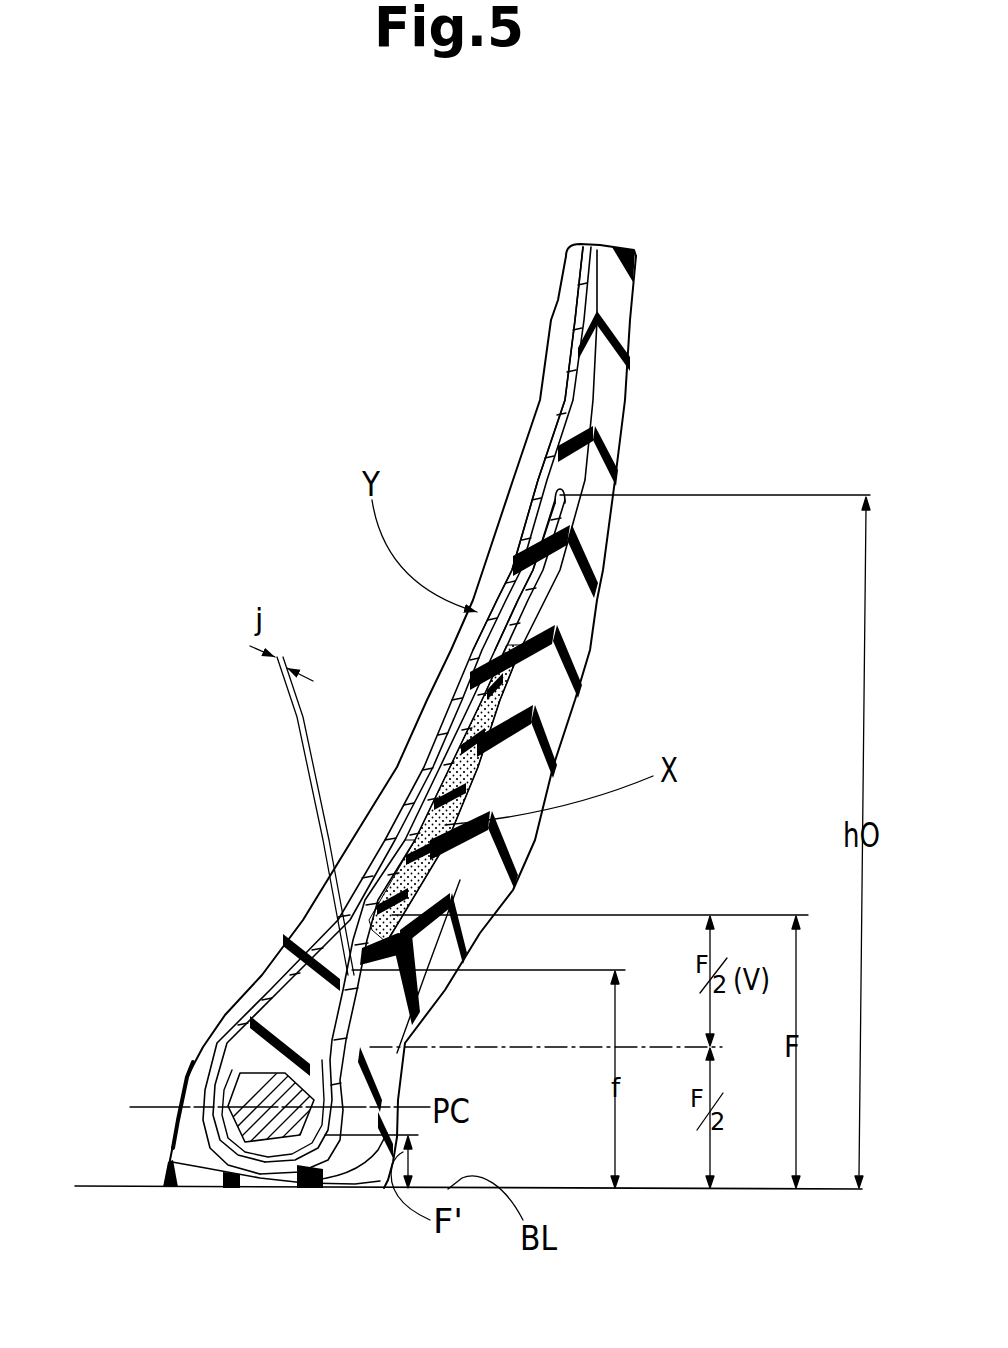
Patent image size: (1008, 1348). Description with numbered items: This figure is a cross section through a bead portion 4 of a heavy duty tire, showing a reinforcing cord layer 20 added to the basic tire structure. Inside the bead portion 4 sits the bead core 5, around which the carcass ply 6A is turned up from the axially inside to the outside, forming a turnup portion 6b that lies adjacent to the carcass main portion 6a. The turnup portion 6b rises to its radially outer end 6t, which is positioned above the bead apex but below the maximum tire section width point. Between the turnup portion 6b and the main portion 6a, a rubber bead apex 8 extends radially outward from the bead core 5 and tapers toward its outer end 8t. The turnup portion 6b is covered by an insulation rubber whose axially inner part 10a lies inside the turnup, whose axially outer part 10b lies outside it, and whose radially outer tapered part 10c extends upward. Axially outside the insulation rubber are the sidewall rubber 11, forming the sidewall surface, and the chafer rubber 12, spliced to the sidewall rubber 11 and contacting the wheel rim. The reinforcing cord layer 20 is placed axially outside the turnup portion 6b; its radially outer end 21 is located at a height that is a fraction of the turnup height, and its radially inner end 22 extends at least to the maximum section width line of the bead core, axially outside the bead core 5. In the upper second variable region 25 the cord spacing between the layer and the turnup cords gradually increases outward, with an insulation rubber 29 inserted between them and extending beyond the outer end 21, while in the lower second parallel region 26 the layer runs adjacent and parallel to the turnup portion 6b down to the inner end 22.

The bead portion 4 is at (210, 965).
The bead core 5 is at (247, 1087).
The carcass ply 6A is at (579, 276).
The carcass main portion 6a is at (580, 313).
The carcass ply turnup portion 6b is at (578, 533).
The radially outer end of the turnup portion 6t is at (565, 492).
The bead apex 8 is at (303, 973).
The radially outer end of the bead apex 8t is at (402, 832).
The axially inner part of the insulation rubber 10a is at (537, 530).
The axially outer part of the insulation rubber 10b is at (548, 602).
The radially outer tapered part of the insulation rubber 10c is at (578, 403).
The sidewall rubber 11 is at (625, 313).
The chafer rubber 12 is at (388, 1060).
The reinforcing cord layer 20 is at (380, 993).
The radially outer end of the reinforcing cord layer 21 is at (398, 912).
The radially inner end of the reinforcing cord layer 22 is at (337, 1160).
The second variable region 25 is at (388, 948).
The second parallel region 26 is at (407, 1107).
The insulation rubber 29 is at (462, 760).